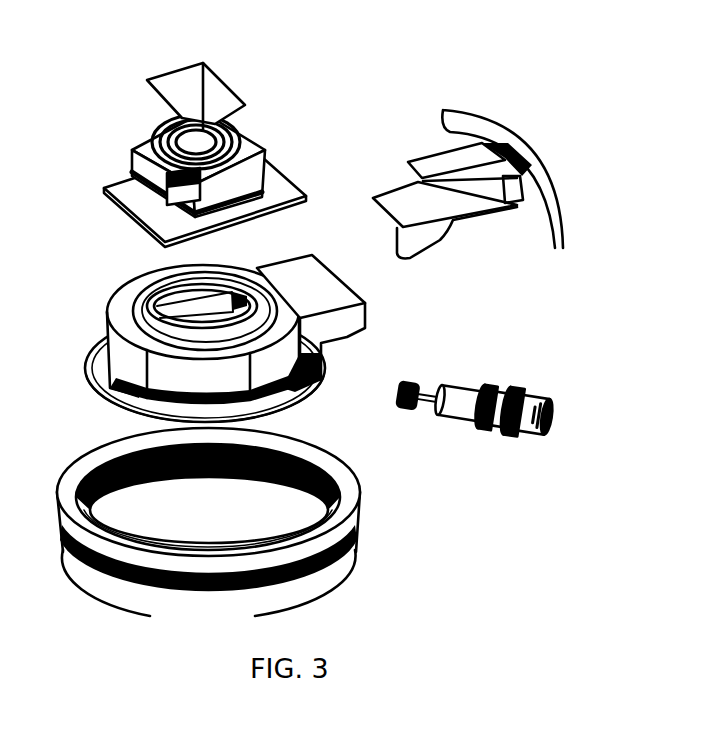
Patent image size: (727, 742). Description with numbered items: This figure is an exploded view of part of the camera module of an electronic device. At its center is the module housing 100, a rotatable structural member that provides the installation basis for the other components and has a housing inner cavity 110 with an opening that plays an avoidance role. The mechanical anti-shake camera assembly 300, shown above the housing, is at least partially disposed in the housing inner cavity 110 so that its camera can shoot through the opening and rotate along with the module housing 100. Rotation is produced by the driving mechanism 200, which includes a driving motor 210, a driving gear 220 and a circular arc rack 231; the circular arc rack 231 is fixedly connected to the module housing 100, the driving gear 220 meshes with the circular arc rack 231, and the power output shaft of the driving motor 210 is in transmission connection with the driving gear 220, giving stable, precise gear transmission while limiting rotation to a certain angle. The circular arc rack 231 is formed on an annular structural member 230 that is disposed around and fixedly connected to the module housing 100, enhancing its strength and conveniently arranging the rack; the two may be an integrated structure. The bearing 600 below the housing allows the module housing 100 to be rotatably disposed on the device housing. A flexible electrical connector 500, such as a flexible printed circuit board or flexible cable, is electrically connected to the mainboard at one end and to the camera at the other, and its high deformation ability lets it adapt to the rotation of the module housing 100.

The module housing 100 is at (107, 302).
The housing inner cavity 110 is at (165, 295).
The driving mechanism 200 is at (445, 364).
The driving motor 210 is at (501, 380).
The driving gear 220 is at (407, 381).
The annular structural member 230 is at (340, 378).
The circular arc rack 231 is at (108, 393).
The mechanical anti-shake camera assembly 300 is at (140, 138).
The flexible electrical connector 500 is at (432, 157).
The bearing 600 is at (342, 546).